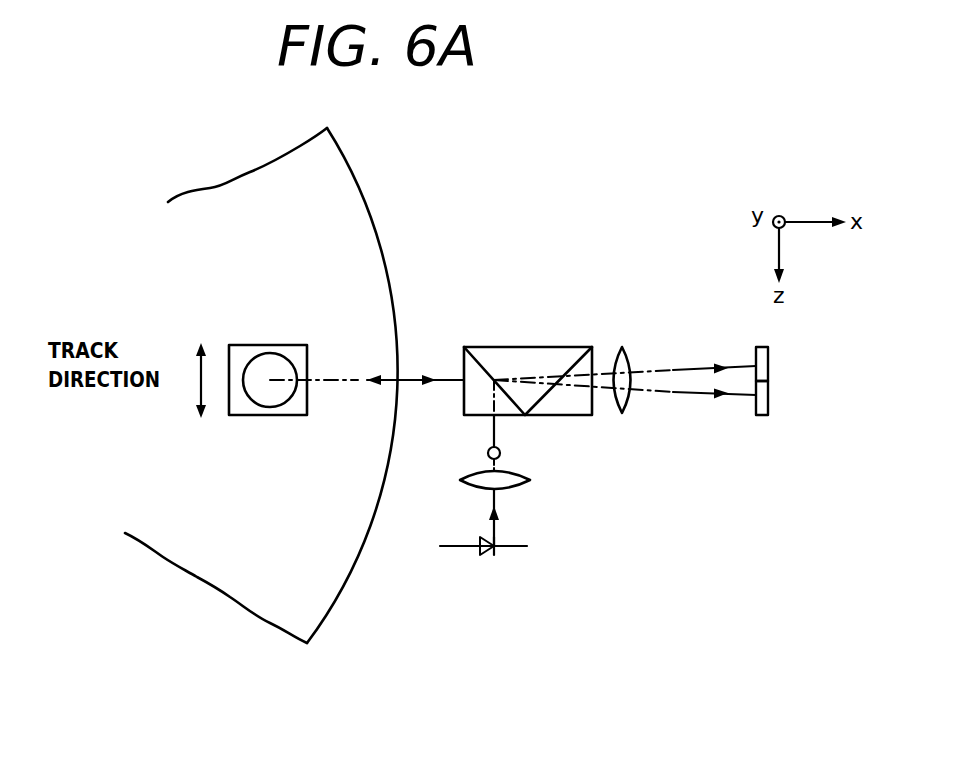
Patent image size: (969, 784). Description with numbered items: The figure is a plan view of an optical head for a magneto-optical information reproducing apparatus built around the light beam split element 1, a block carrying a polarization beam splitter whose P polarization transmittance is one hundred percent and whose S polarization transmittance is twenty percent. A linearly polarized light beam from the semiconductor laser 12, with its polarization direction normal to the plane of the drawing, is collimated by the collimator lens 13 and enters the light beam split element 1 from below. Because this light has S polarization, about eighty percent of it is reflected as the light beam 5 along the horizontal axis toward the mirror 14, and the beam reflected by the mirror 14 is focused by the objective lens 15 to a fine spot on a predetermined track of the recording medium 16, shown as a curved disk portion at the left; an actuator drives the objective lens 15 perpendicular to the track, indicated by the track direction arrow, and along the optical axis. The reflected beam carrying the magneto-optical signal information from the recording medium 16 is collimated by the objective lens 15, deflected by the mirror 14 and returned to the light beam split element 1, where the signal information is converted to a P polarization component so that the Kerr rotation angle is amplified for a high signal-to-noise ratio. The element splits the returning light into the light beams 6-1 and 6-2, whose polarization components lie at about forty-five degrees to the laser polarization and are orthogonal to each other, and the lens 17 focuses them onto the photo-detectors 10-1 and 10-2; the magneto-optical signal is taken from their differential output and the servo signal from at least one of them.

The light beam split element 1 is at (537, 345).
The light beam 5 is at (410, 378).
The light beam 6-1 is at (687, 367).
The light beam 6-2 is at (693, 393).
The photo-detector 10-1 is at (767, 350).
The photo-detector 10-2 is at (767, 415).
The semiconductor laser 12 is at (487, 553).
The collimator lens 13 is at (517, 487).
The mirror 14 is at (290, 408).
The objective lens 15 is at (260, 398).
The recording medium 16 is at (382, 278).
The lens 17 is at (627, 413).